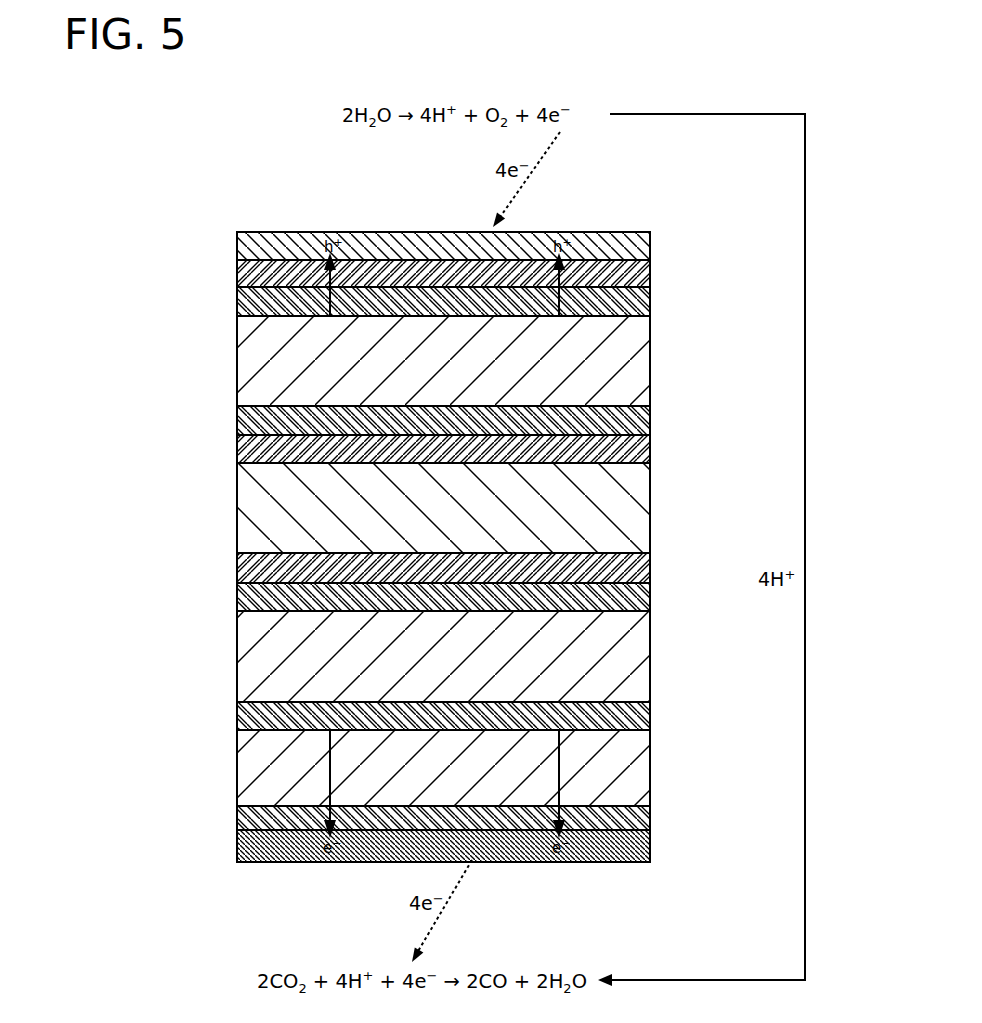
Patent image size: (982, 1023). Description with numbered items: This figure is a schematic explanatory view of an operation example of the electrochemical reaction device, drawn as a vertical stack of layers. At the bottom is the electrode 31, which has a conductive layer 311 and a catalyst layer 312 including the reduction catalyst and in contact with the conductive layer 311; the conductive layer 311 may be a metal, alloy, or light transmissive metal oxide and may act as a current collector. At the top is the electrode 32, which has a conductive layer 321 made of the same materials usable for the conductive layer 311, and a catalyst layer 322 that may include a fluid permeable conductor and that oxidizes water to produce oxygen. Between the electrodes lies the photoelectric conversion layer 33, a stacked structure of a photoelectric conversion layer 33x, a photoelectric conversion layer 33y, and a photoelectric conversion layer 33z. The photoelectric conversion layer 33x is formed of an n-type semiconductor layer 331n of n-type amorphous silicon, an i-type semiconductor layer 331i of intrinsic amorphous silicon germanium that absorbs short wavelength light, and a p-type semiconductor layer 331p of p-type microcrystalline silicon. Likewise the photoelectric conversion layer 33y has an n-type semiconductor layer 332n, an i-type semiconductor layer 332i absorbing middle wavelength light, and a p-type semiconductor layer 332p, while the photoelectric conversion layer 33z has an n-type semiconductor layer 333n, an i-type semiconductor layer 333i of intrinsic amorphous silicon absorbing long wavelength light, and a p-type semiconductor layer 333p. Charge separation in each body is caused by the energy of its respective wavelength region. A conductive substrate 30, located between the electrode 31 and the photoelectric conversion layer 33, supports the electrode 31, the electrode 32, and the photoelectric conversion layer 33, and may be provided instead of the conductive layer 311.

The conductive substrate 30 is at (260, 770).
The electrode 31 is at (52, 811).
The conductive layer 311 is at (262, 820).
The catalyst layer 312 is at (262, 843).
The electrode 32 is at (92, 226).
The conductive layer 321 is at (237, 276).
The catalyst layer 322 is at (237, 246).
The photoelectric conversion layer 33 is at (92, 291).
The photoelectric conversion layer 33x is at (142, 606).
The photoelectric conversion layer 33y is at (142, 441).
The photoelectric conversion layer 33z is at (142, 319).
The n-type semiconductor layer 331n is at (237, 714).
The i-type semiconductor layer 331i is at (256, 665).
The p-type semiconductor layer 331p is at (237, 606).
The n-type semiconductor layer 332n is at (237, 566).
The i-type semiconductor layer 332i is at (256, 518).
The p-type semiconductor layer 332p is at (237, 455).
The n-type semiconductor layer 333n is at (237, 418).
The i-type semiconductor layer 333i is at (256, 366).
The p-type semiconductor layer 333p is at (237, 308).